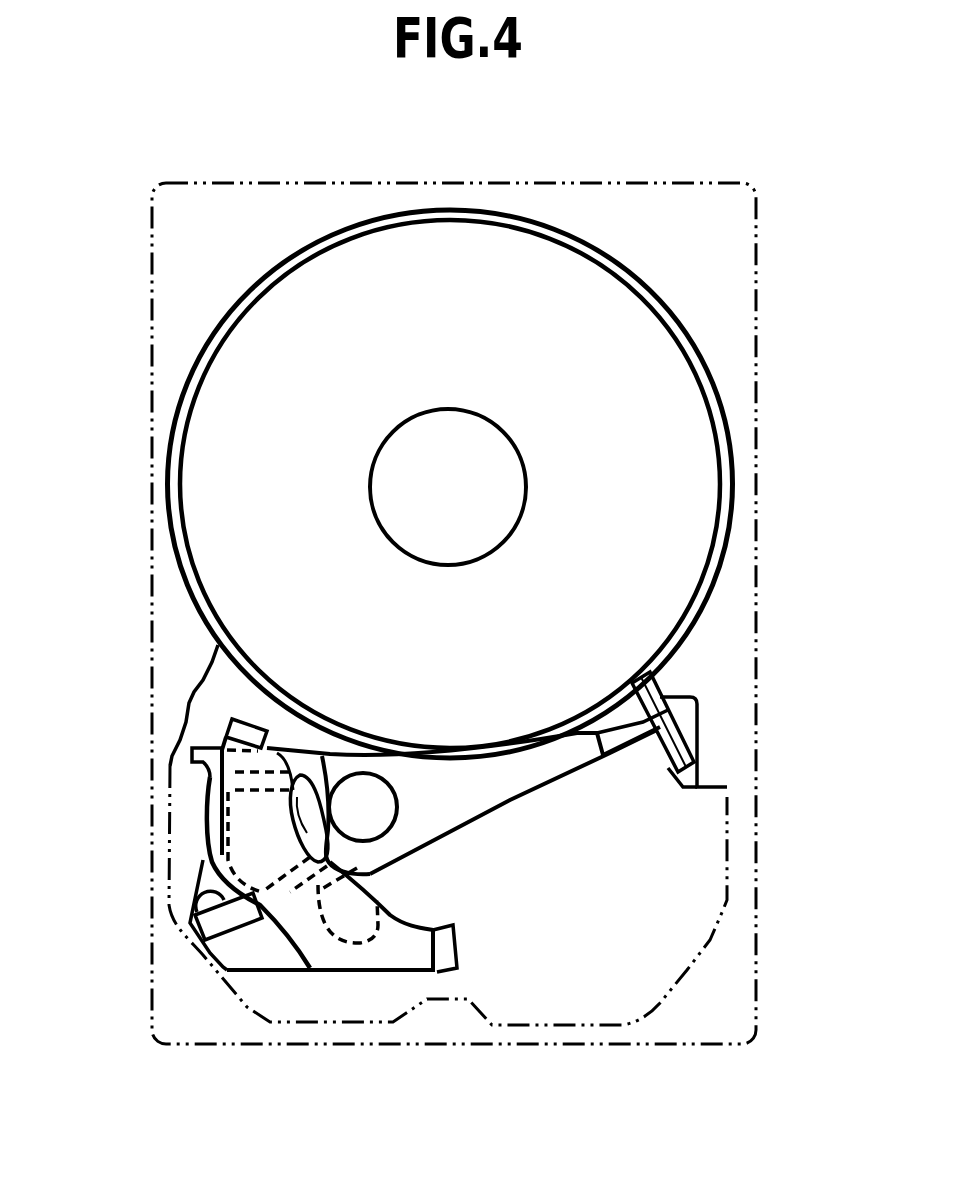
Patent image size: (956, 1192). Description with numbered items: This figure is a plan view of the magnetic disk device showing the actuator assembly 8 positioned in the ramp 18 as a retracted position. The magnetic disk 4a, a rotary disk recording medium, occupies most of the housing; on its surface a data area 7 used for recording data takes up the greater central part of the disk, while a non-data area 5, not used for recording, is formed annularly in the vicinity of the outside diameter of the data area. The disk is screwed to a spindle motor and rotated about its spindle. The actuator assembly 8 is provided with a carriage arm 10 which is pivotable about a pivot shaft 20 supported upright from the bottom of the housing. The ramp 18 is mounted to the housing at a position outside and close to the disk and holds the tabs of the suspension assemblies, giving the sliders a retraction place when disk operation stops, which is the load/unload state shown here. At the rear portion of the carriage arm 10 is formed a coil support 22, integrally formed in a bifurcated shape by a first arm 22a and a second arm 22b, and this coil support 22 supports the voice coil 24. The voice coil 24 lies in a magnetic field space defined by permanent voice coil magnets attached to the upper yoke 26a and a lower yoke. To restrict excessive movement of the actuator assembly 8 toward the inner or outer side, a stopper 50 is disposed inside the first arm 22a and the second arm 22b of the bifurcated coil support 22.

The magnetic disk 4a is at (718, 390).
The non-data area 5 is at (180, 438).
The data area 7 is at (237, 375).
The actuator assembly 8 is at (468, 836).
The carriage arm 10 is at (480, 778).
The ramp 18 is at (683, 727).
The pivot shaft 20 is at (358, 802).
The coil support 22 is at (205, 962).
The first arm 22a is at (320, 893).
The second arm 22b is at (203, 760).
The voice coil 24 is at (205, 828).
The upper yoke 26a is at (393, 957).
The stopper 50 is at (197, 937).